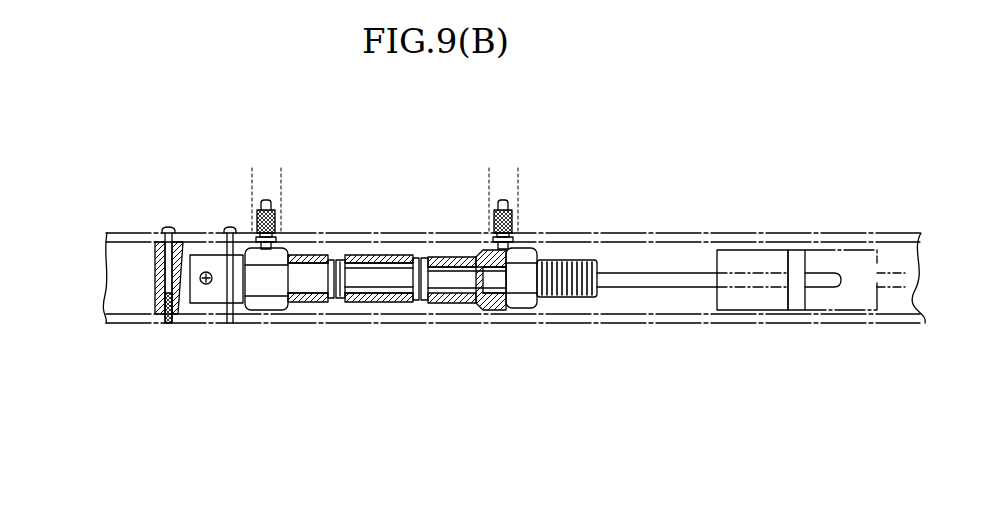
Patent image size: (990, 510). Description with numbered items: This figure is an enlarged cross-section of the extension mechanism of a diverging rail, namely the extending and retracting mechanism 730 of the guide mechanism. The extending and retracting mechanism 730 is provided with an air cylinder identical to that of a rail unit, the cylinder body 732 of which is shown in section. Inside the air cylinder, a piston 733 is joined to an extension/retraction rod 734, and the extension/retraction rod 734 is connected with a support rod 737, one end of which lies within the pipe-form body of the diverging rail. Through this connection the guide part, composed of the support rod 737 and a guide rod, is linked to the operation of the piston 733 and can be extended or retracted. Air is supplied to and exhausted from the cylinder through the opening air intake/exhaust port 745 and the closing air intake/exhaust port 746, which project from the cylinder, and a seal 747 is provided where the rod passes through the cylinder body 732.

The extending and retracting mechanism 730 is at (421, 262).
The cylinder body 732 is at (455, 303).
The piston 733 is at (418, 300).
The extension/retraction rod 734 is at (625, 288).
The support rod 737 is at (370, 302).
The opening air intake/exhaust port 745 is at (265, 198).
The closing air intake/exhaust port 746 is at (505, 198).
The seal 747 is at (336, 300).